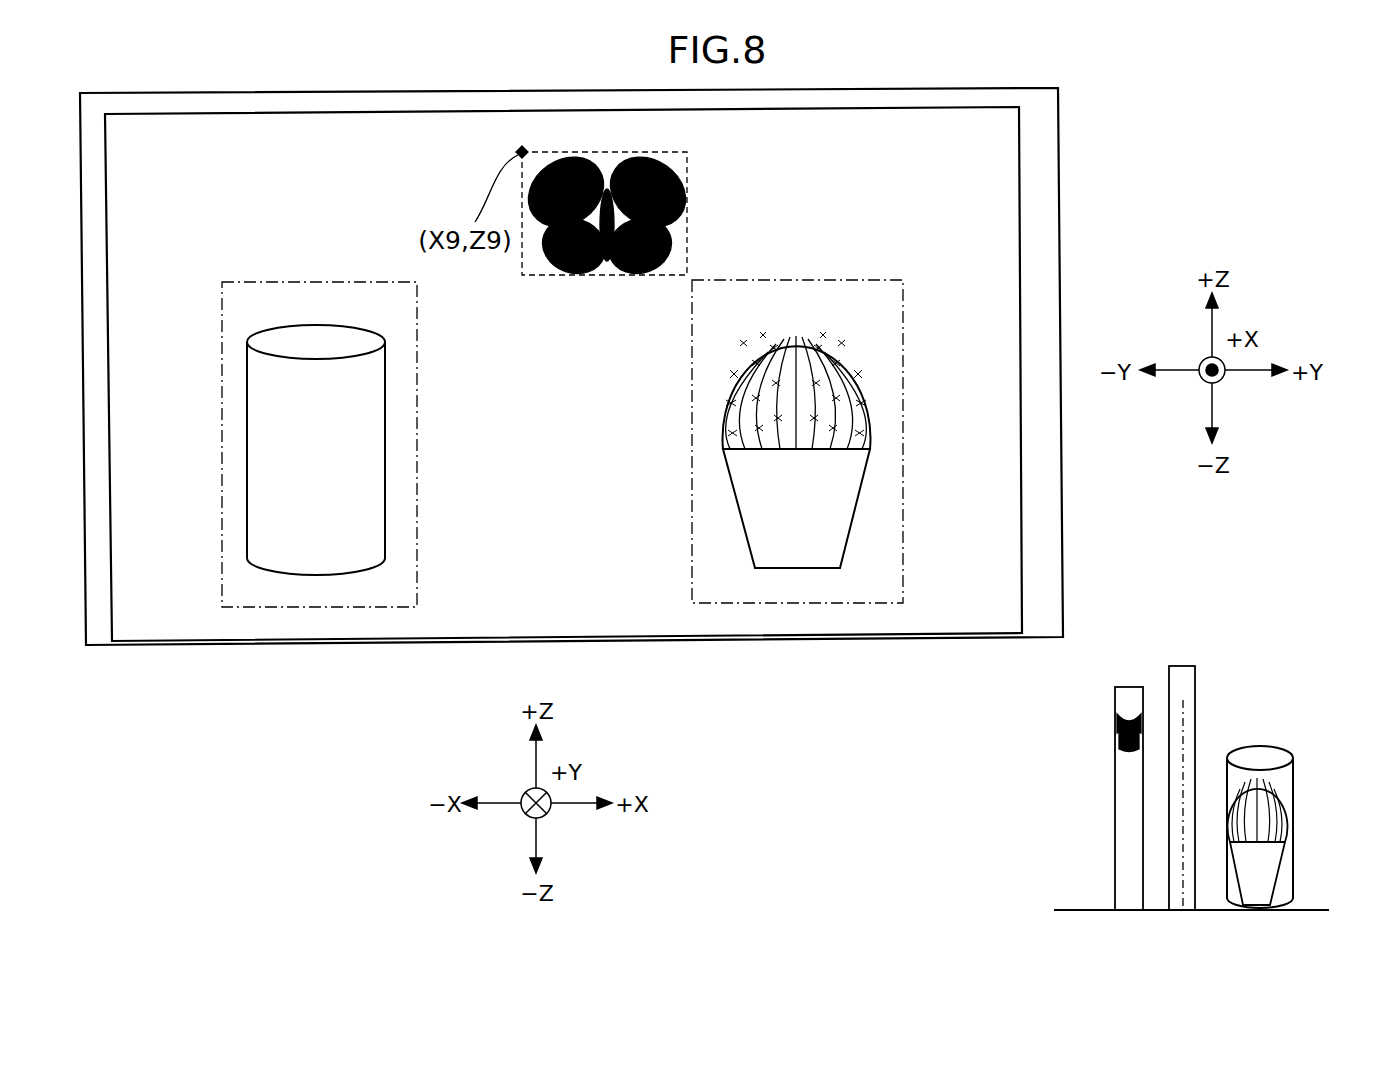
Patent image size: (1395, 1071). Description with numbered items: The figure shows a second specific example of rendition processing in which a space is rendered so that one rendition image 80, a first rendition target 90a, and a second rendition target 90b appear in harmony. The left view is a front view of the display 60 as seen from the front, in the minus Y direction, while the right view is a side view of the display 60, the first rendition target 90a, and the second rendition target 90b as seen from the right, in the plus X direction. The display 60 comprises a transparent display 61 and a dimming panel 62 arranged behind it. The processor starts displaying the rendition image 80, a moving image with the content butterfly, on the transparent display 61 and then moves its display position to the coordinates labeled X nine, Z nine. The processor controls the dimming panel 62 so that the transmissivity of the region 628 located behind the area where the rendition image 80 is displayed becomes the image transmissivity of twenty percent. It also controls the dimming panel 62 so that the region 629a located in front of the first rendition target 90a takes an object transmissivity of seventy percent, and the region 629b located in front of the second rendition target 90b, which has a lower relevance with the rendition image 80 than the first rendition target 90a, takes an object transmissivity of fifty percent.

The display 60 is at (1155, 662).
The transparent display 61 is at (1015, 142).
The dimming panel 62 is at (1048, 186).
The rendition image 80 is at (568, 276).
The first rendition target 90a is at (795, 533).
The second rendition target 90b is at (288, 537).
The region of the dimming panel 628 is at (633, 277).
The region of the dimming panel 629a is at (858, 280).
The region of the dimming panel 629b is at (333, 282).